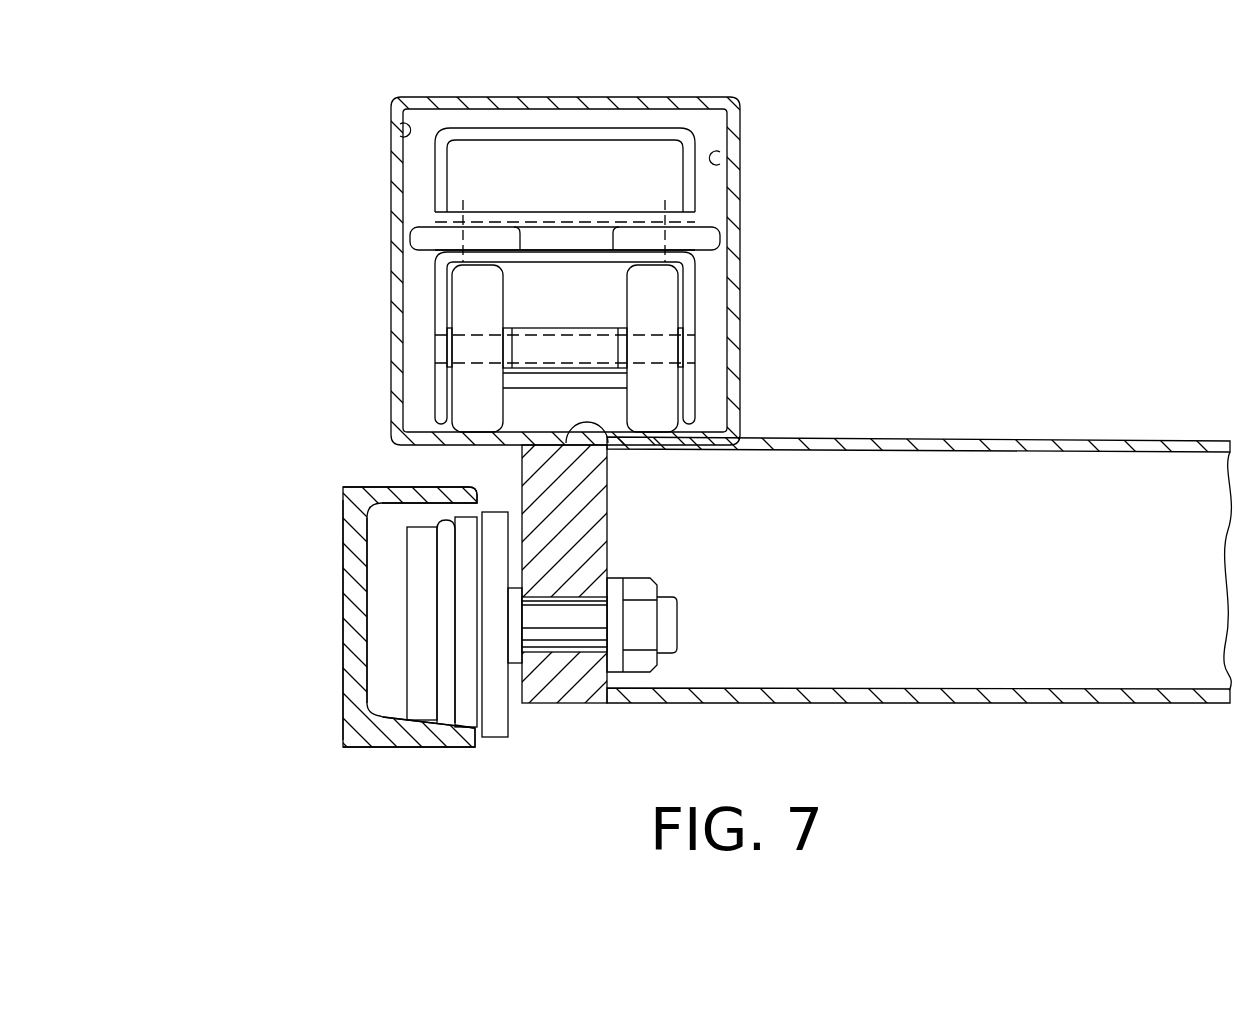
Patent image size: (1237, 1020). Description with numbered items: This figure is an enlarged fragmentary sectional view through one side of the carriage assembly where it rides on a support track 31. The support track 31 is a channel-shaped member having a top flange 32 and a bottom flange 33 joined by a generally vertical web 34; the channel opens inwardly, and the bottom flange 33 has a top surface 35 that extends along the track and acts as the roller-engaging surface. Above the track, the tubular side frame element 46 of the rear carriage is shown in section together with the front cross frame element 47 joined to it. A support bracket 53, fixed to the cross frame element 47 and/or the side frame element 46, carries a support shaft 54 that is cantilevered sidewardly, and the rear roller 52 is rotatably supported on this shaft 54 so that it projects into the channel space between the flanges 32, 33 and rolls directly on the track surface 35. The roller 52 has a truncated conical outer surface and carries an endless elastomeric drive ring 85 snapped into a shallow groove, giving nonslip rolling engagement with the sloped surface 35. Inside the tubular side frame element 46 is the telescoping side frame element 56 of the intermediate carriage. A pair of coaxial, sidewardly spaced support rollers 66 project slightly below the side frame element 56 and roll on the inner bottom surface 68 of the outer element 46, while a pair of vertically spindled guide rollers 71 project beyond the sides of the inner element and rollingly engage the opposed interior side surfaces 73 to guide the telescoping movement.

The support track 31 is at (333, 623).
The top flange 32 is at (396, 496).
The bottom flange 33 is at (428, 745).
The web 34 is at (352, 554).
The top surface 35 is at (461, 716).
The side frame element 46 is at (684, 93).
The front cross frame element 47 is at (977, 437).
The rear roller 52 is at (462, 677).
The support bracket 53 is at (565, 698).
The support shaft 54 is at (570, 632).
The side frame element 56 is at (543, 122).
The support roller 66 is at (463, 402).
The inner bottom surface 68 is at (608, 443).
The guide roller 71 is at (415, 240).
The side surface 73 is at (401, 128).
The elastomeric drive ring 85 is at (443, 643).